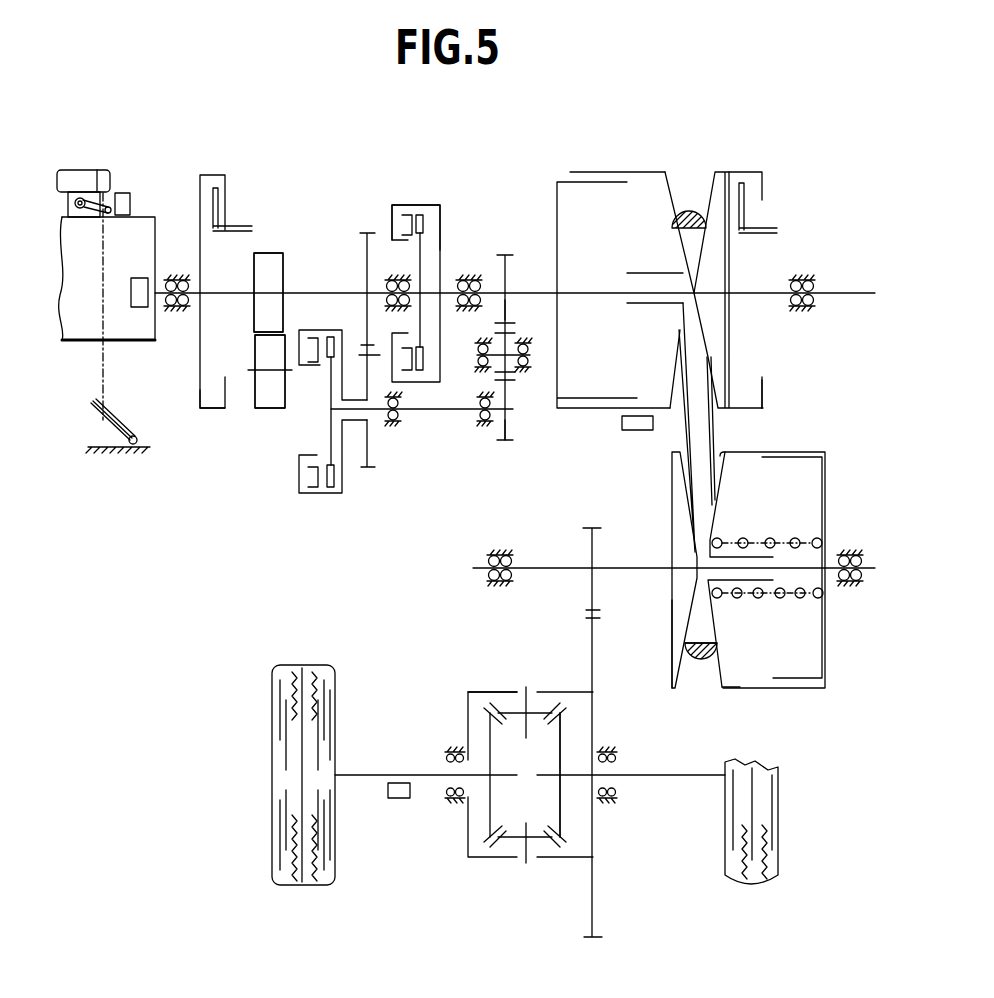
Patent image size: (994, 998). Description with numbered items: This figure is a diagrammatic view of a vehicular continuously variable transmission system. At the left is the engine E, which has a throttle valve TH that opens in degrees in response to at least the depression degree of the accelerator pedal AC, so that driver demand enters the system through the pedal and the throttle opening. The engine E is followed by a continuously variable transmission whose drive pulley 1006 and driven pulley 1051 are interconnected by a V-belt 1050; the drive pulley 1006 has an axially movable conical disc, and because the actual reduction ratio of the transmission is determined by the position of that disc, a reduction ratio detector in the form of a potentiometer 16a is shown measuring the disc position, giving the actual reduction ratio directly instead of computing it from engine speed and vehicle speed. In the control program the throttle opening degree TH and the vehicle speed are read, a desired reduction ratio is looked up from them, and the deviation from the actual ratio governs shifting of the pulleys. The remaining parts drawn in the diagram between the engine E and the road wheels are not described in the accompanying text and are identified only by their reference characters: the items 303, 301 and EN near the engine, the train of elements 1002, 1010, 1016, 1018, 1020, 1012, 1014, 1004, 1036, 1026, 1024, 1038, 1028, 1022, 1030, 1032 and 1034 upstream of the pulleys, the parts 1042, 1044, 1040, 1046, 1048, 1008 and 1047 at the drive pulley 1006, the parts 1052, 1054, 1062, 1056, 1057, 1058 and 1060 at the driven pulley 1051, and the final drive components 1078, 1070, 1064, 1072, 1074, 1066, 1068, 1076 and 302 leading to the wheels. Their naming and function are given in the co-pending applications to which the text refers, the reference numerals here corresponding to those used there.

The engine E is at (140, 232).
The throttle valve TH is at (84, 181).
The throttle sensor 303 is at (133, 192).
The engine speed sensor 301 is at (141, 278).
The engine EN is at (86, 277).
The accelerator pedal AC is at (96, 428).
The input shaft 1002 is at (166, 300).
The gear set 1010 is at (247, 333).
The housing 1016 is at (199, 174).
The housing lower part 1018 is at (215, 410).
The sensor element 1020 is at (226, 208).
The gear 1012 is at (278, 263).
The gear 1014 is at (278, 410).
The clutch 1004 is at (437, 196).
The clutch housing 1036 is at (391, 222).
The brake 1026 is at (365, 263).
The clutch 1024 is at (322, 500).
The clutch 1038 is at (299, 472).
The brake 1028 is at (370, 445).
The countershaft 1022 is at (460, 412).
The brake 1030 is at (507, 277).
The brake disc 1032 is at (510, 309).
The brake end 1034 is at (510, 430).
The potentiometer 16a is at (640, 430).
The hydraulic cylinder 1042 is at (593, 192).
The movable sheave 1044 is at (664, 172).
The fixed sheave 1040 is at (710, 172).
The drive pulley 1006 is at (680, 150).
The housing 1046 is at (762, 172).
The sensor element 1048 is at (751, 204).
The bearing 1008 is at (760, 288).
The housing wall 1047 is at (750, 395).
The output shaft 1052 is at (545, 570).
The movable sheave 1054 is at (672, 648).
The brake element 1062 is at (597, 644).
The V-belt 1050 is at (713, 443).
The hydraulic cylinder 1056 is at (763, 678).
The spring 1057 is at (782, 600).
The driven pulley 1051 is at (698, 676).
The sheave flange 1058 is at (722, 690).
The brake 1060 is at (592, 527).
The axle 1078 is at (667, 777).
The differential housing 1070 is at (455, 707).
The differential 1064 is at (468, 690).
The differential gear 1072 is at (488, 800).
The differential gear 1074 is at (560, 813).
The pinion shaft 1066 is at (513, 712).
The pinion shaft 1068 is at (513, 838).
The axle shaft 1076 is at (403, 773).
The vehicle speed sensor 302 is at (398, 799).